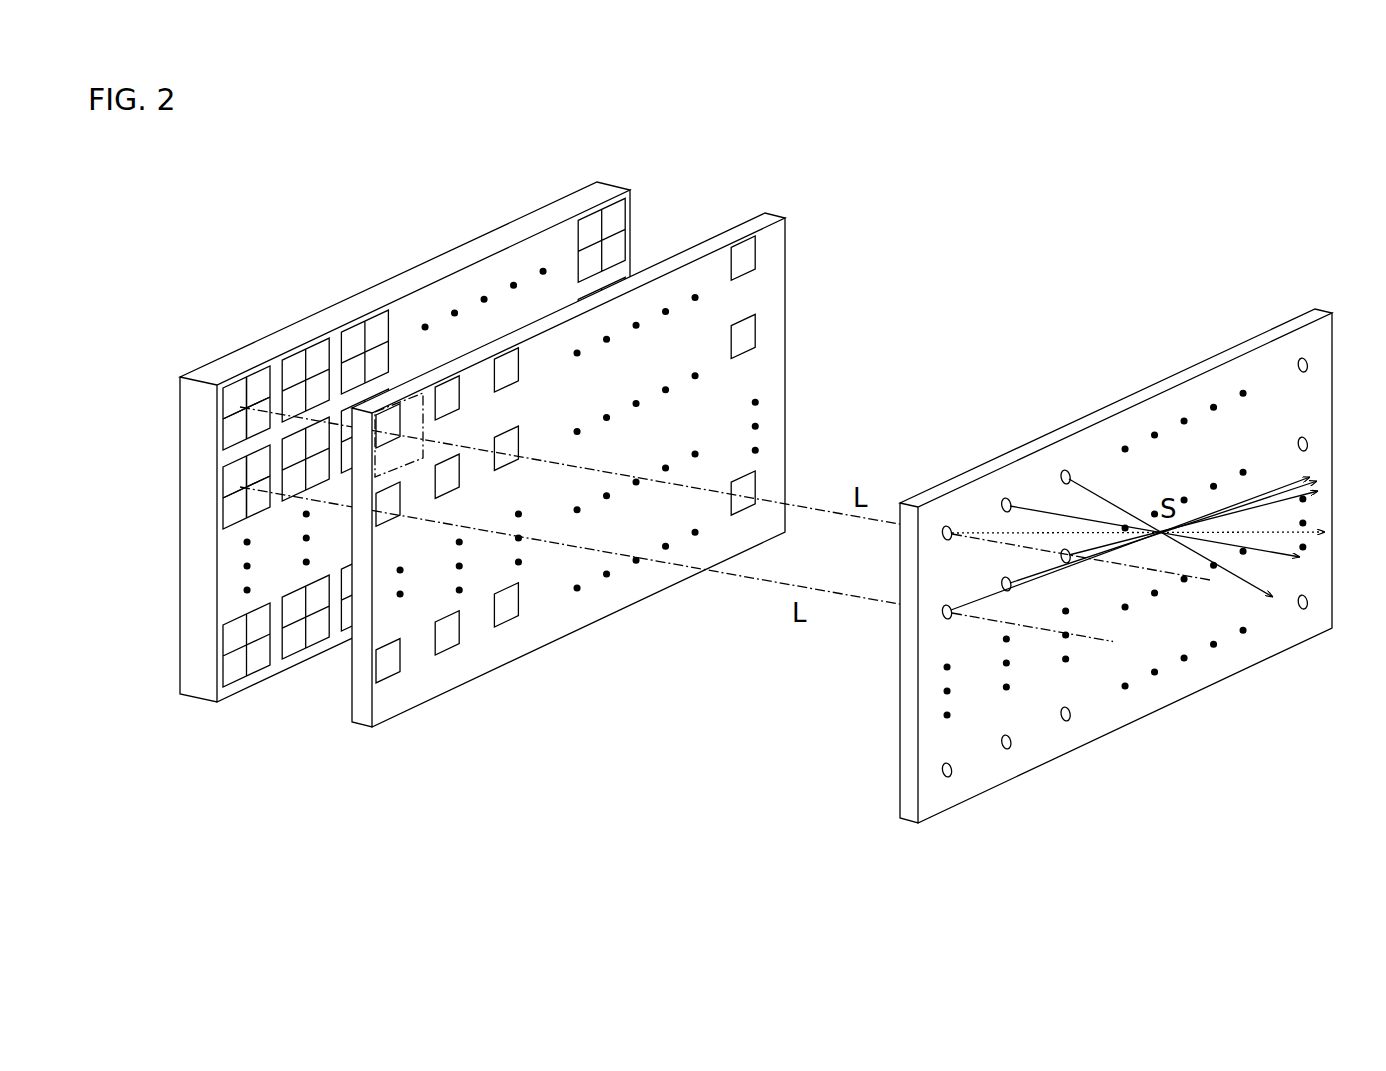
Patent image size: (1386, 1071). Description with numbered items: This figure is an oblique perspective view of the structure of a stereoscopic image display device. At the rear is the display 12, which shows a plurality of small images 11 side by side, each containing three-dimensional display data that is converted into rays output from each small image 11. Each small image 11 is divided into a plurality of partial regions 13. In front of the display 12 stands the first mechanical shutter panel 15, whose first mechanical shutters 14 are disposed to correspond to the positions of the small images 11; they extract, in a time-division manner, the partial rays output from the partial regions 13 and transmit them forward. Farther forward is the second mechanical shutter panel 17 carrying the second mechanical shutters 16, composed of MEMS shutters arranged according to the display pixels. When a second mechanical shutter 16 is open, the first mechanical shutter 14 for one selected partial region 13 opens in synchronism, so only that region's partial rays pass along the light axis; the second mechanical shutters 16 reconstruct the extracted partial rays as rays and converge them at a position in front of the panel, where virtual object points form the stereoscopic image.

The small image 11 is at (356, 318).
The display 12 is at (585, 205).
The partial region 13 is at (259, 411).
The first mechanical shutter 14 is at (388, 427).
The first mechanical shutter panel 15 is at (742, 232).
The second mechanical shutter 16 is at (948, 525).
The second mechanical shutter panel 17 is at (1287, 330).